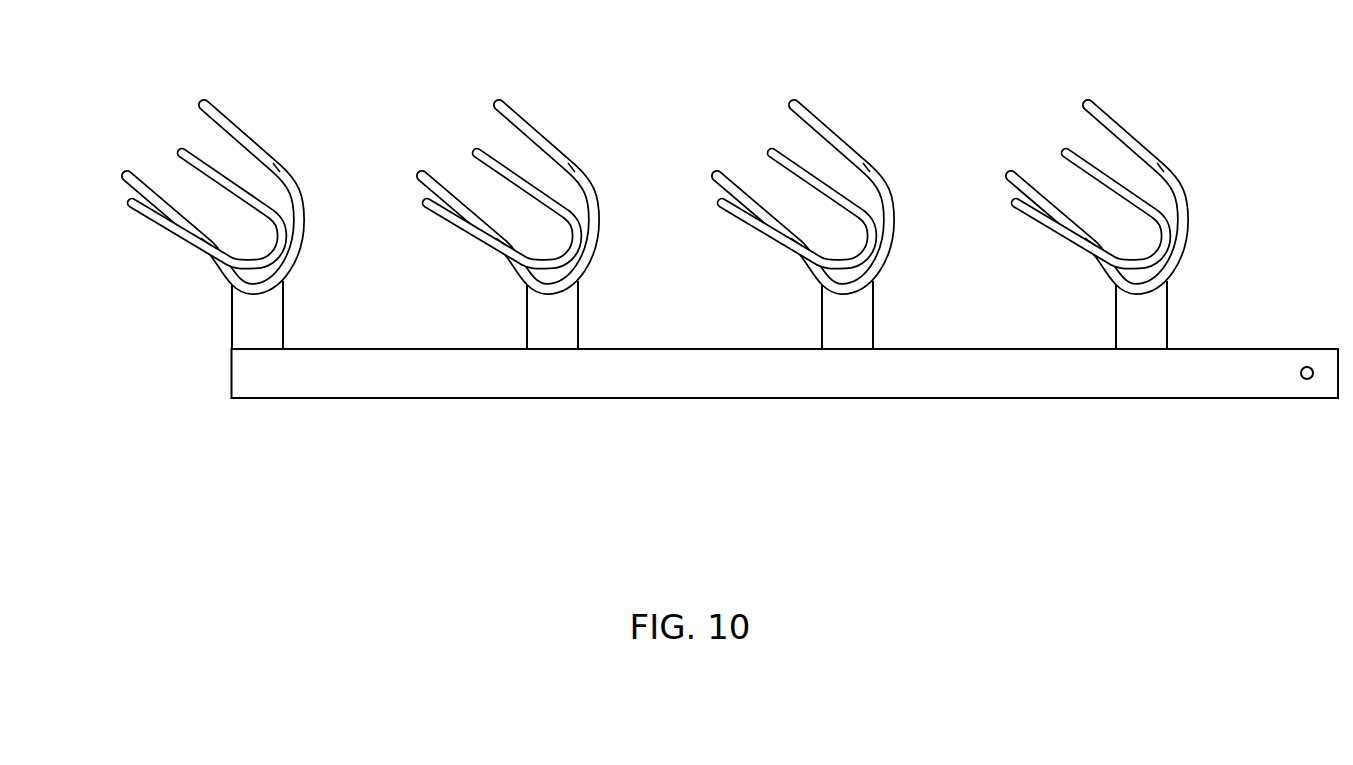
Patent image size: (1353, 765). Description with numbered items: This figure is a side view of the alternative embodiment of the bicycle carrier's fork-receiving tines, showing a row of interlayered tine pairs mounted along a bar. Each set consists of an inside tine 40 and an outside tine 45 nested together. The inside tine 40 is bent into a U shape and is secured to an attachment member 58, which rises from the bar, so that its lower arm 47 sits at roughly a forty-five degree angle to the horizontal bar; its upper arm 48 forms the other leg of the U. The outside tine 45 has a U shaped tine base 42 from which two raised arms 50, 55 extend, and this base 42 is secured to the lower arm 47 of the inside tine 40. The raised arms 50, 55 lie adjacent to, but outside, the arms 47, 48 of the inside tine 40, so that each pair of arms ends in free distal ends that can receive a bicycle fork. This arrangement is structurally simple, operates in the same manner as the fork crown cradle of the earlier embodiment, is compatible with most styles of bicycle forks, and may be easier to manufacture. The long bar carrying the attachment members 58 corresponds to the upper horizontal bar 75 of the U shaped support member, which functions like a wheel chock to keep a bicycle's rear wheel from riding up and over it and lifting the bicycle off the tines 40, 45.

The inside tine 40 is at (223, 197).
The outside tine 45 is at (339, 202).
The raised arm 55 is at (517, 120).
The raised arm 50 is at (443, 195).
The tine base 42 is at (875, 258).
The tine arm 48 is at (507, 175).
The tine arm 47 is at (447, 217).
The attachment member 58 is at (260, 325).
The upper horizontal bar 75 is at (453, 375).